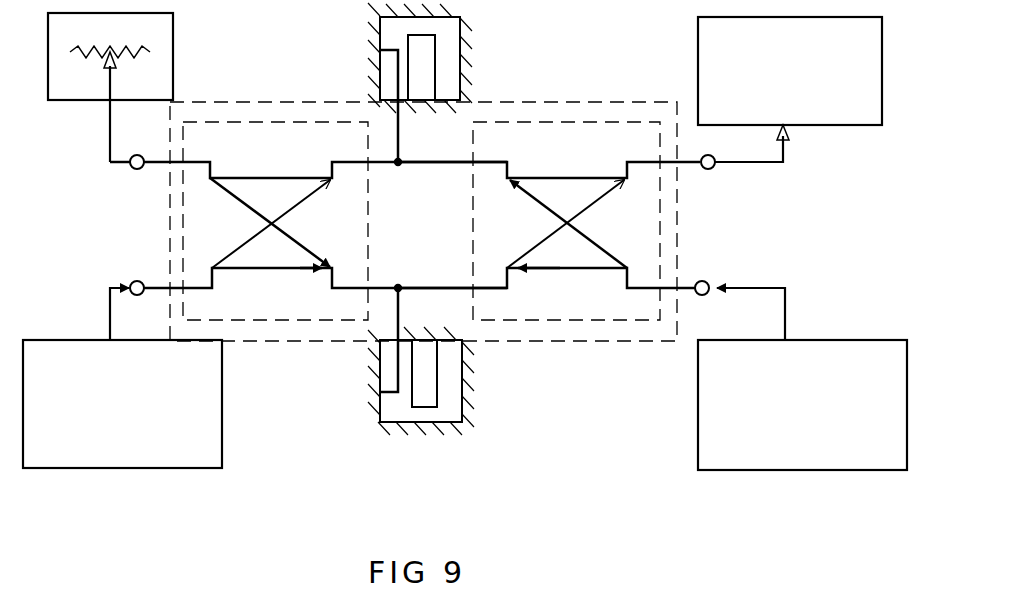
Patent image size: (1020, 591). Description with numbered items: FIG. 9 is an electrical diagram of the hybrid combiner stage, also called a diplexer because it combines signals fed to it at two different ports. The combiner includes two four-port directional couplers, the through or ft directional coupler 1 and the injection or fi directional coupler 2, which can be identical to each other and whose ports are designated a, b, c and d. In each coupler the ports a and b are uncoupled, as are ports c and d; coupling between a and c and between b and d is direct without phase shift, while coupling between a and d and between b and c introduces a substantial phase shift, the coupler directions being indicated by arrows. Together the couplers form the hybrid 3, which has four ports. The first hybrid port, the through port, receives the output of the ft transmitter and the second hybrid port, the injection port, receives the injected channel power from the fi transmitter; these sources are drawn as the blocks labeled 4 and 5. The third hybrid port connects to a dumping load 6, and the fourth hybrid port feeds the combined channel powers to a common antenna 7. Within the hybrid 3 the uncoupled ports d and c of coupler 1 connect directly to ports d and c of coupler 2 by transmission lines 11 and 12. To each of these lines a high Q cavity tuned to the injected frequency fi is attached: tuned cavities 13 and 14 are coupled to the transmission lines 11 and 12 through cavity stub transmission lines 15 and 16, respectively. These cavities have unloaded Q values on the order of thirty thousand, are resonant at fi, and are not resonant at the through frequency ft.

The ft directional coupler 1 is at (250, 120).
The fi directional coupler 2 is at (563, 122).
The hybrid 3 is at (300, 102).
The through port from ft transmitter 4 is at (40, 340).
The injection port from fi transmitter 5 is at (836, 340).
The dumping load 6 is at (50, 101).
The common antenna 7 is at (852, 128).
The transmission line 11 is at (432, 165).
The transmission line 12 is at (422, 288).
The tuned cavity 13 is at (462, 66).
The tuned cavity 14 is at (464, 406).
The cavity stub transmission line 15 is at (400, 142).
The cavity stub transmission line 16 is at (402, 310).